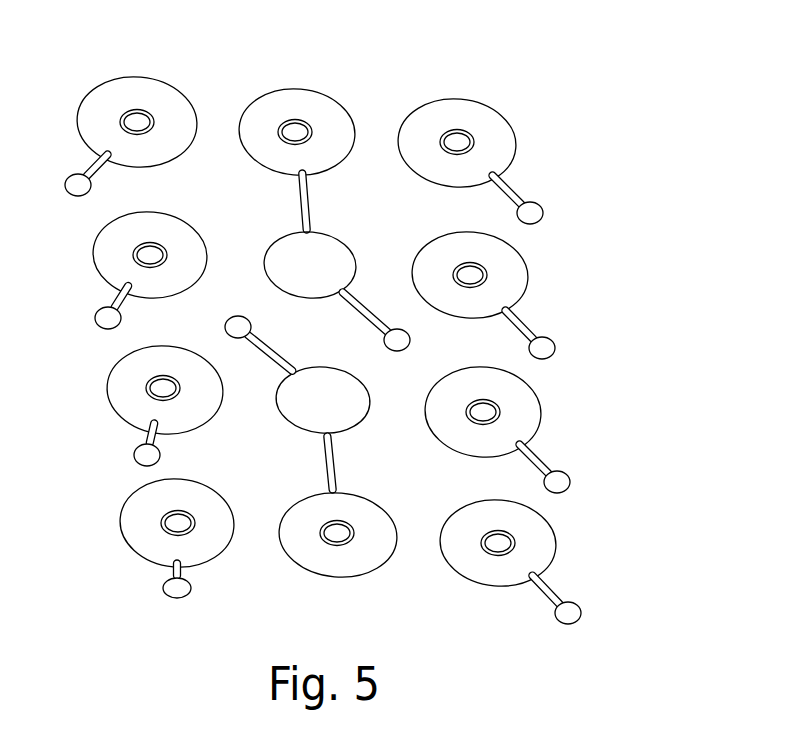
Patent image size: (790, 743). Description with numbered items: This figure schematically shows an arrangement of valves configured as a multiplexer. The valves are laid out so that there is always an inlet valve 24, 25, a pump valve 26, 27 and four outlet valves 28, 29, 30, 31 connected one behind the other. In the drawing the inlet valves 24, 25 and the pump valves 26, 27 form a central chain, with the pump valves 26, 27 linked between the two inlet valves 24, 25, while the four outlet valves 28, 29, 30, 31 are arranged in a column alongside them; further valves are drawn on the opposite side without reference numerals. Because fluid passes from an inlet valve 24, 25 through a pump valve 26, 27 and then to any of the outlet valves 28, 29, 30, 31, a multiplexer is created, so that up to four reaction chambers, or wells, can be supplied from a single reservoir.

The inlet valve 24 is at (372, 560).
The inlet valve 25 is at (323, 117).
The pump valve 26 is at (325, 383).
The pump valve 27 is at (330, 258).
The outlet valve 28 is at (507, 145).
The outlet valve 29 is at (510, 280).
The outlet valve 30 is at (528, 413).
The outlet valve 31 is at (540, 545).